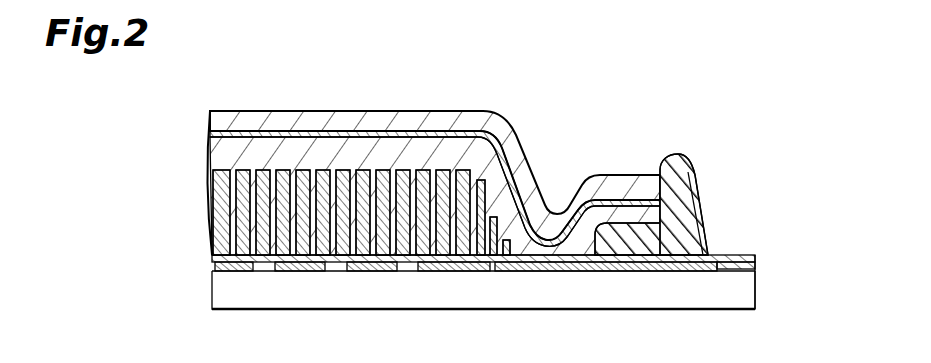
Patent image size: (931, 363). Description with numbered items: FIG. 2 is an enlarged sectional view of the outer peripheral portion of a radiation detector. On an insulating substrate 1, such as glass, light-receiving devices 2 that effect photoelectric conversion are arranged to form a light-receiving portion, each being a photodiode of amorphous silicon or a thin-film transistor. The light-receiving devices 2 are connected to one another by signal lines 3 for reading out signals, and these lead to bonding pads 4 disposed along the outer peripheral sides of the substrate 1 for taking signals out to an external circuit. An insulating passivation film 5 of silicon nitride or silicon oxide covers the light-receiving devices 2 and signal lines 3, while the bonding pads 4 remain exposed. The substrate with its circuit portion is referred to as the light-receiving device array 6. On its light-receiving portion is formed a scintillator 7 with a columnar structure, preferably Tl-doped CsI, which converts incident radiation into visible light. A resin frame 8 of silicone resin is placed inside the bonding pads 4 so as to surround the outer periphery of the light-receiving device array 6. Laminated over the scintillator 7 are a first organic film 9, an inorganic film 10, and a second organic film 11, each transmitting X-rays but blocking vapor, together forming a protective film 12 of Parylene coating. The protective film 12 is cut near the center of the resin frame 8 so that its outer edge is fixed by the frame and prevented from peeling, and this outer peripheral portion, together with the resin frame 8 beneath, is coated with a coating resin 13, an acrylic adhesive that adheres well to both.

The insulating substrate 1 is at (755, 290).
The light-receiving device 2 is at (490, 274).
The signal line 3 is at (610, 271).
The bonding pad 4 is at (755, 258).
The passivation film 5 is at (713, 255).
The light-receiving device array 6 is at (208, 256).
The scintillator 7 is at (210, 212).
The resin frame 8 is at (660, 255).
The first organic film 9 is at (210, 148).
The inorganic film 10 is at (212, 135).
The second organic film 11 is at (212, 118).
The protective film 12 is at (156, 97).
The coating resin 13 is at (693, 178).